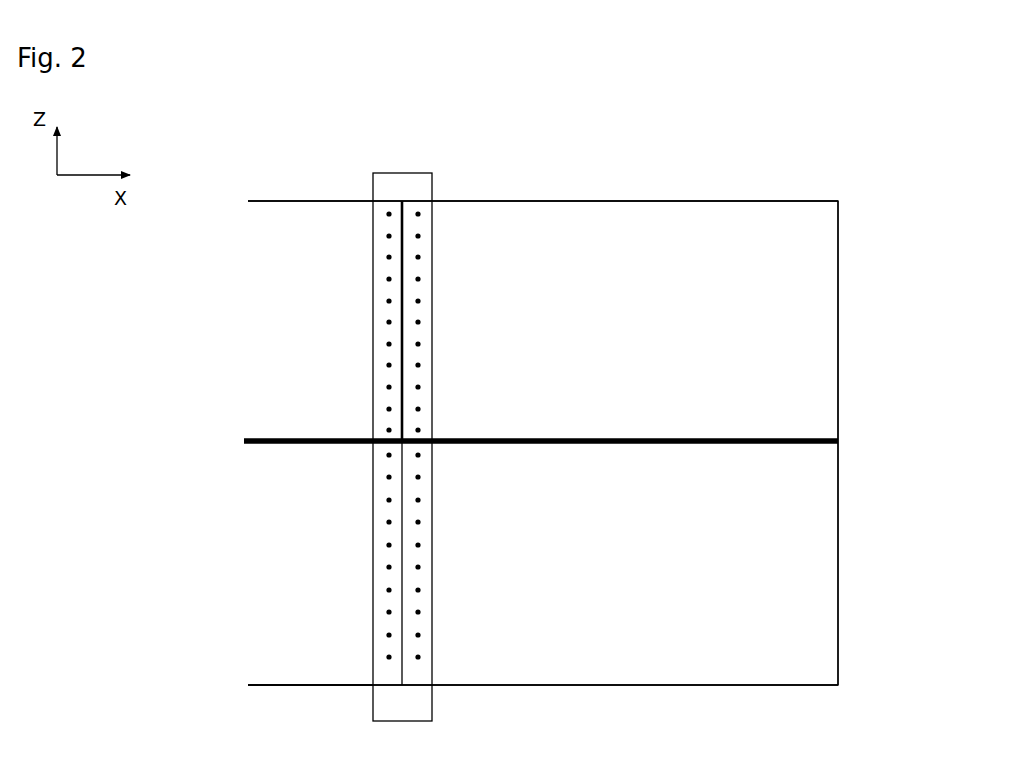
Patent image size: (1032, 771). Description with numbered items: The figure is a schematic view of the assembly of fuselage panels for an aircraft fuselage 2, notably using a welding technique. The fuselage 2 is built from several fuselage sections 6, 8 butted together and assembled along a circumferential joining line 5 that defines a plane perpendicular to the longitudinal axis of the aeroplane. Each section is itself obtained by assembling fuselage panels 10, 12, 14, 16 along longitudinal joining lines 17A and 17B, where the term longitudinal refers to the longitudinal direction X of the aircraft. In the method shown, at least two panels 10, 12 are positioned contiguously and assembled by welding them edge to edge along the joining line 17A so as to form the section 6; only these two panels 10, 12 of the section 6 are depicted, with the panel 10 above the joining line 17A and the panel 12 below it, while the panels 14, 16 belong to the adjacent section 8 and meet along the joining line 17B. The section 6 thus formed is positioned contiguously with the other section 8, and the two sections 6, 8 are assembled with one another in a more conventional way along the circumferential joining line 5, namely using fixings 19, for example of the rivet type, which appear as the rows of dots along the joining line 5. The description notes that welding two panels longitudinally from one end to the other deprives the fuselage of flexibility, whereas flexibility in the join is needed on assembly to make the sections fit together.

The fuselage 2 is at (260, 222).
The fuselage panel 14 is at (302, 235).
The circumferential joining line 5 is at (400, 232).
The longitudinal joining line 17A is at (715, 436).
The longitudinal joining line 17B is at (273, 446).
The fuselage panel 10 is at (798, 275).
The fuselage section 6 is at (845, 378).
The fuselage panel 12 is at (792, 567).
The fixings 19 is at (418, 456).
The fuselage panel 16 is at (308, 635).
The fuselage section 8 is at (283, 690).